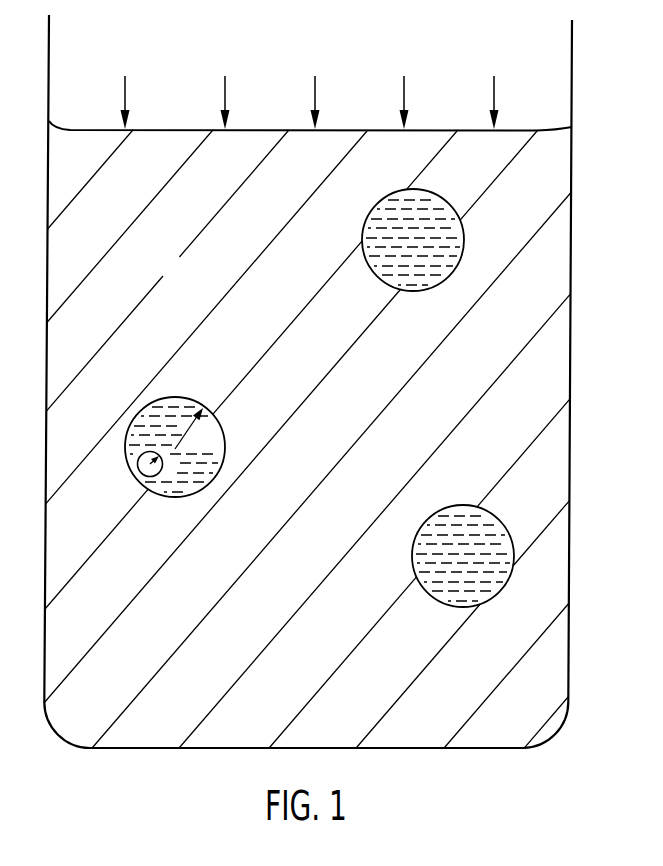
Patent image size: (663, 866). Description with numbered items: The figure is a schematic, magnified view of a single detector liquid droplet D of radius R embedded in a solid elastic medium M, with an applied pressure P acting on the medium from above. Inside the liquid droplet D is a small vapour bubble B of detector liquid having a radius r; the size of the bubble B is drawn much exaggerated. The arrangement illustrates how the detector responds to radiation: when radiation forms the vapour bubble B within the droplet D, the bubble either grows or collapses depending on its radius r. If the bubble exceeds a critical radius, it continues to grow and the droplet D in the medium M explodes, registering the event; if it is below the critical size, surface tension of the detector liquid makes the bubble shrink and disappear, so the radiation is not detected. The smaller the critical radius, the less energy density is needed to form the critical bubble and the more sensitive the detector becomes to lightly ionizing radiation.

The solid medium M is at (308, 381).
The applied pressure P is at (310, 89).
The detector liquid droplet D is at (130, 408).
The radius of the liquid droplet R is at (190, 430).
The vapour bubble B is at (127, 478).
The radius of the vapour bubble r is at (150, 464).